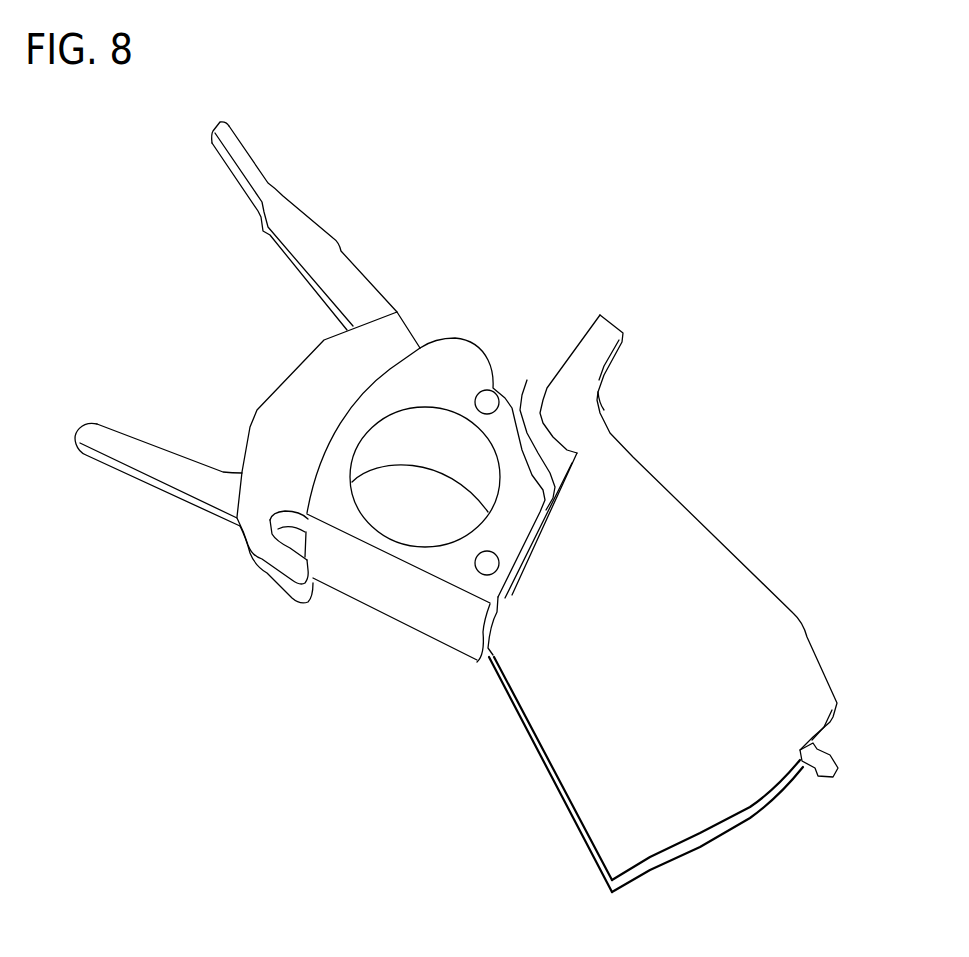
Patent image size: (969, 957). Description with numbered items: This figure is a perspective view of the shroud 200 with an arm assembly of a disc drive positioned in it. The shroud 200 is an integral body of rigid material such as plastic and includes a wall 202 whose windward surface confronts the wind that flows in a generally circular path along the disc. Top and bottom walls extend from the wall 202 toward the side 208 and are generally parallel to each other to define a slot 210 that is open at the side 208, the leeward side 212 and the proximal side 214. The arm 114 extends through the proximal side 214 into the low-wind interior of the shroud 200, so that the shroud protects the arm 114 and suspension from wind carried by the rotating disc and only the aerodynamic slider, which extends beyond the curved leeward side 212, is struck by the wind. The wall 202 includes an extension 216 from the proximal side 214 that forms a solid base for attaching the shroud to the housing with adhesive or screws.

The arm 114 is at (527, 382).
The shroud 200 is at (681, 789).
The wall 202 is at (680, 532).
The side 208 is at (556, 803).
The slot 210 is at (830, 752).
The leeward side 212 is at (704, 840).
The proximal side 214 is at (480, 660).
The extension 216 is at (601, 383).